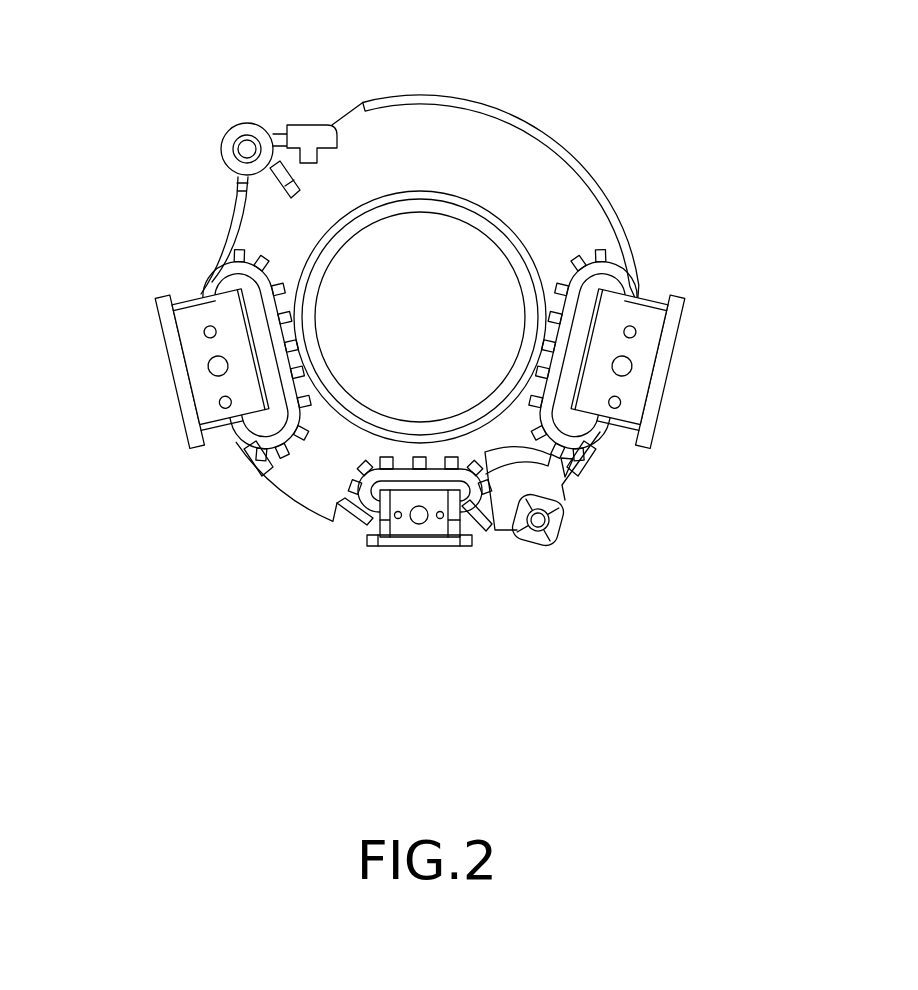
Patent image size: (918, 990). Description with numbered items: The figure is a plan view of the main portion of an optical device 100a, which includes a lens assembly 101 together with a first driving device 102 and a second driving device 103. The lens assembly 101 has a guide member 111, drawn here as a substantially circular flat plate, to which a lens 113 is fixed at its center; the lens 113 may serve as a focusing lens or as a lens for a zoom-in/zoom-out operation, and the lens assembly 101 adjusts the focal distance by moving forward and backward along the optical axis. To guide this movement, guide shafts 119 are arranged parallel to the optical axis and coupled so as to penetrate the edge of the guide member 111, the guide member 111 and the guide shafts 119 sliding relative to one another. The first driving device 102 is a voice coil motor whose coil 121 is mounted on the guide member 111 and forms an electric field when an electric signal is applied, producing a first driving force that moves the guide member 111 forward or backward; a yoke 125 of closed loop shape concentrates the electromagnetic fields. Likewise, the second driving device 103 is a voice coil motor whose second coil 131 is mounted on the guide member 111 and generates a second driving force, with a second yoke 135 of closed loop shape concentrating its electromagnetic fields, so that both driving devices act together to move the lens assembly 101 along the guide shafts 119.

The optical device 100a is at (432, 329).
The lens assembly 101 is at (435, 275).
The first driving device 102 is at (424, 335).
The second driving device 103 is at (388, 548).
The guide member 111 is at (507, 120).
The lens 113 is at (425, 247).
The guide shaft 119 is at (243, 149).
The coil 121 is at (207, 273).
The yoke 125 is at (672, 325).
The second coil 131 is at (467, 505).
The second yoke 135 is at (367, 540).